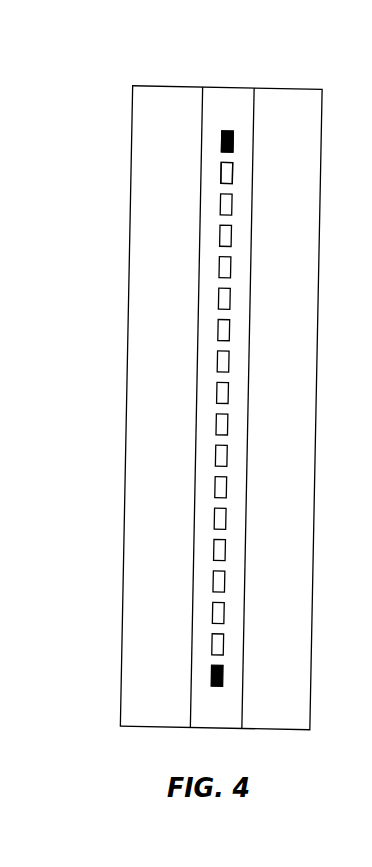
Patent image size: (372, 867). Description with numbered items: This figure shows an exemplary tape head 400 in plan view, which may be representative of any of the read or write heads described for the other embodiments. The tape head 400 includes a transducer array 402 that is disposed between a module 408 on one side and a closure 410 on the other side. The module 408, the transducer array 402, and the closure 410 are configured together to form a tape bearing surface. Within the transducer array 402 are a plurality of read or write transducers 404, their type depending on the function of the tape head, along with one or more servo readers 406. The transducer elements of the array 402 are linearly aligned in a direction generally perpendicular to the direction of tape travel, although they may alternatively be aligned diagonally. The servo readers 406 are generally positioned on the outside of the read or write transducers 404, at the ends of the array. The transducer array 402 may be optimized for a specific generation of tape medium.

The tape head 400 is at (108, 256).
The transducer array 402 is at (230, 100).
The read or write transducers 404 is at (233, 170).
The servo readers 406 is at (222, 137).
The module 408 is at (138, 716).
The closure 410 is at (258, 716).